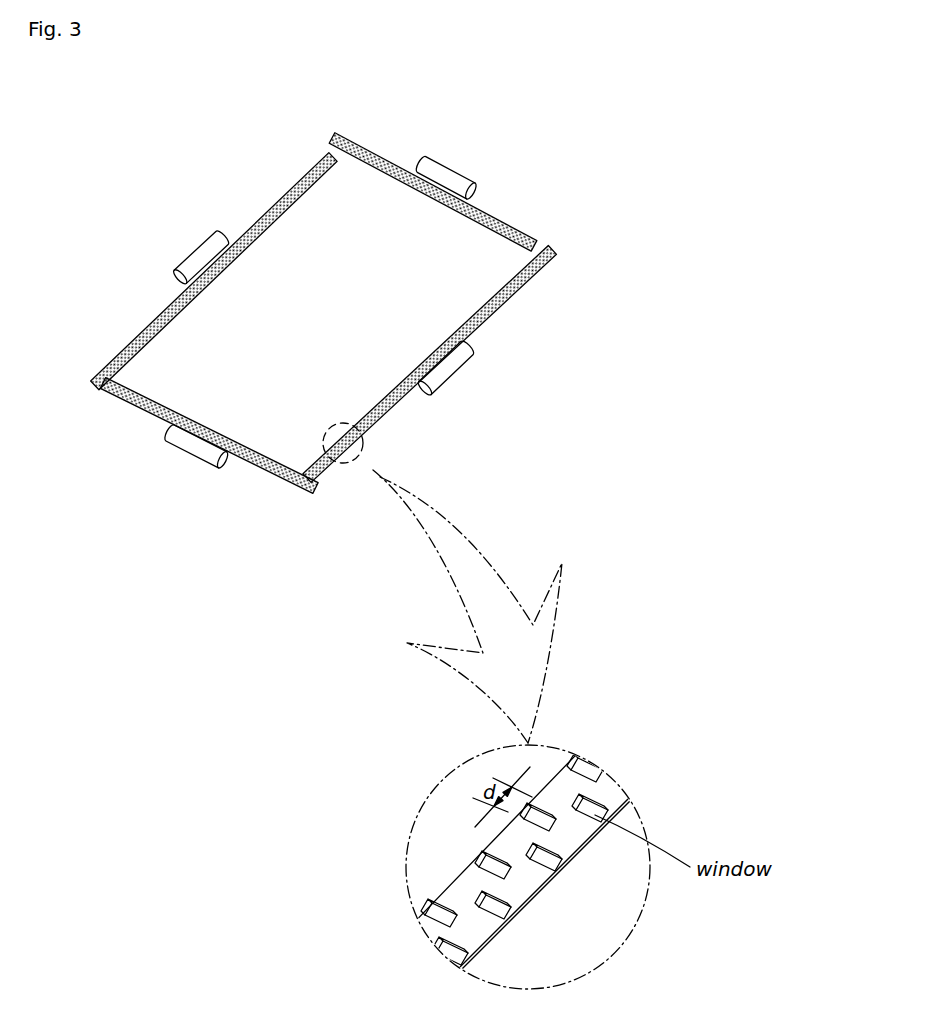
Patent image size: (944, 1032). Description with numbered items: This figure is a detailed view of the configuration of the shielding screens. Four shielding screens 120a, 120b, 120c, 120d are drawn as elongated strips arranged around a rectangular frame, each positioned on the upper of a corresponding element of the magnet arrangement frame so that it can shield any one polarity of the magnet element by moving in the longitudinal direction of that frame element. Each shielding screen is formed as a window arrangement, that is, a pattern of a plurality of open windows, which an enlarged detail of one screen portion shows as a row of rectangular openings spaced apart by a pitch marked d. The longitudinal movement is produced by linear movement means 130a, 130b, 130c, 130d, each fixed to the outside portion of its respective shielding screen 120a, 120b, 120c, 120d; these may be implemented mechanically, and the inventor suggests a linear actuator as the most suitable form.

The shielding screen 120a is at (257, 477).
The shielding screen 120b is at (402, 406).
The shielding screen 120c is at (497, 208).
The shielding screen 120d is at (247, 226).
The linear movement means 130a is at (188, 452).
The linear movement means 130b is at (457, 358).
The linear movement means 130c is at (440, 173).
The linear movement means 130d is at (190, 267).